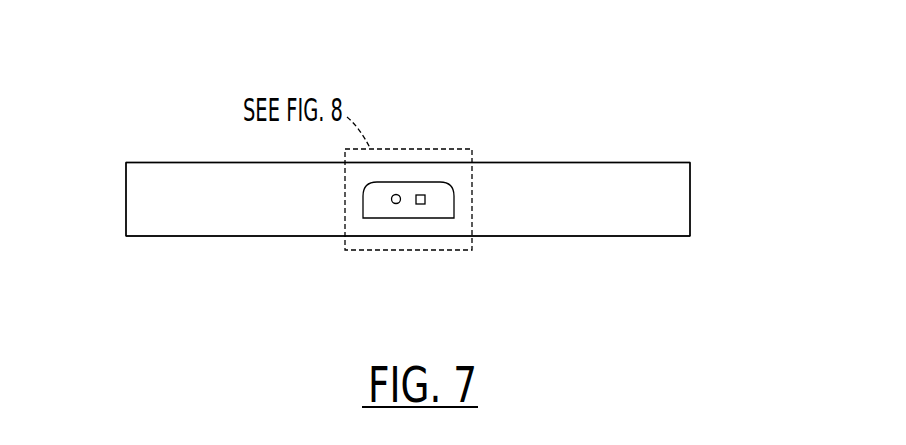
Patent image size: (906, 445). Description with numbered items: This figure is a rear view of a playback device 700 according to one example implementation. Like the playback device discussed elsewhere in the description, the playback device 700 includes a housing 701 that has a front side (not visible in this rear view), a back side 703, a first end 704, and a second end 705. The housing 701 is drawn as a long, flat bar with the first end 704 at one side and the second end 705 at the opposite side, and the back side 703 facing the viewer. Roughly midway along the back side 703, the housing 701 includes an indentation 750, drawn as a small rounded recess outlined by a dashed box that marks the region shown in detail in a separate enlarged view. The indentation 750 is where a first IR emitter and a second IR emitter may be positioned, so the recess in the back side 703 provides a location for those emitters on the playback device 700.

The playback device 700 is at (668, 117).
The housing 701 is at (505, 162).
The back side 703 is at (187, 222).
The first end 704 is at (690, 202).
The second end 705 is at (126, 202).
The indentation 750 is at (442, 182).